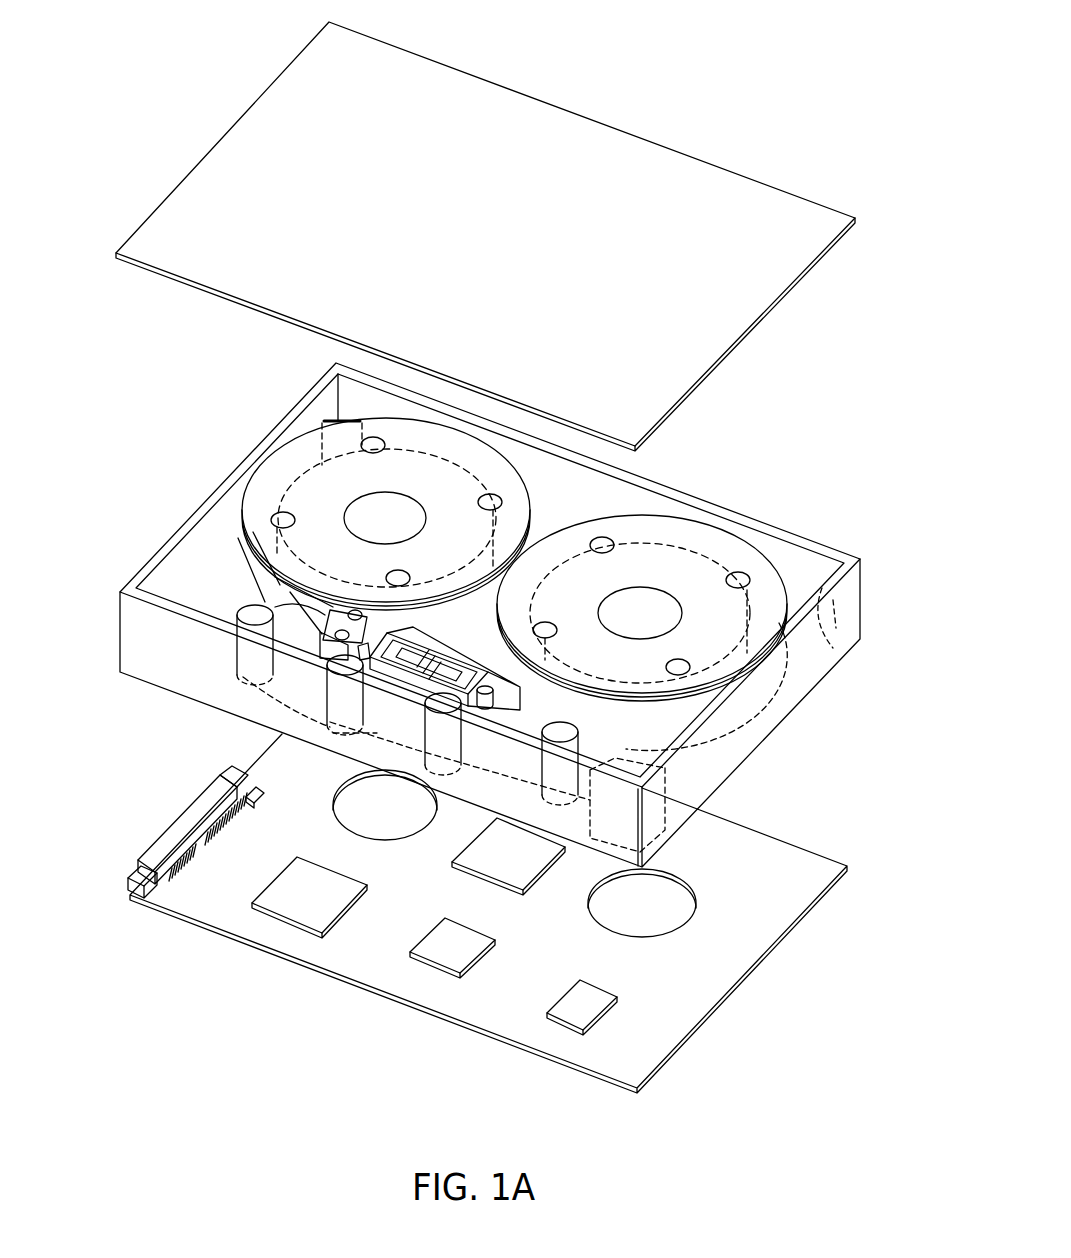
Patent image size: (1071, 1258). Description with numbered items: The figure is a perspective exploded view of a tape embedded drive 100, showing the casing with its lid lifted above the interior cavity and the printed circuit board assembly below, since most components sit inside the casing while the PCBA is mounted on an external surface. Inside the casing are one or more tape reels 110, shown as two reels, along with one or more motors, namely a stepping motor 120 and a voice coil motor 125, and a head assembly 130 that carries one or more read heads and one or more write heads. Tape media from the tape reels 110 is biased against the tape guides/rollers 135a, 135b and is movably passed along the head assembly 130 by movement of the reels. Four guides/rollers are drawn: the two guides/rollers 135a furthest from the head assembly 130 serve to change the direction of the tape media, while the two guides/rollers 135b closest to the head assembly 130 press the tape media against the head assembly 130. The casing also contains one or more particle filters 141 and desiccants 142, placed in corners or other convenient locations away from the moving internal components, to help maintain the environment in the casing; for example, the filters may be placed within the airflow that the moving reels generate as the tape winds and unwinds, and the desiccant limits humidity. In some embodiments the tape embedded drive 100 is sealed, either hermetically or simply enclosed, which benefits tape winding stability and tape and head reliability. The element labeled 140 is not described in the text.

The tape embedded drive 100 is at (762, 80).
The tape reels 110 is at (442, 428).
The stepping motor 120 is at (307, 633).
The voice coil motor 125 is at (405, 645).
The head assembly 130 is at (405, 645).
The guides/rollers 135a is at (247, 615).
The guides/rollers 135b is at (325, 668).
The spindle hub 140 is at (355, 498).
The particle filters 141 is at (837, 620).
The desiccants 142 is at (650, 807).